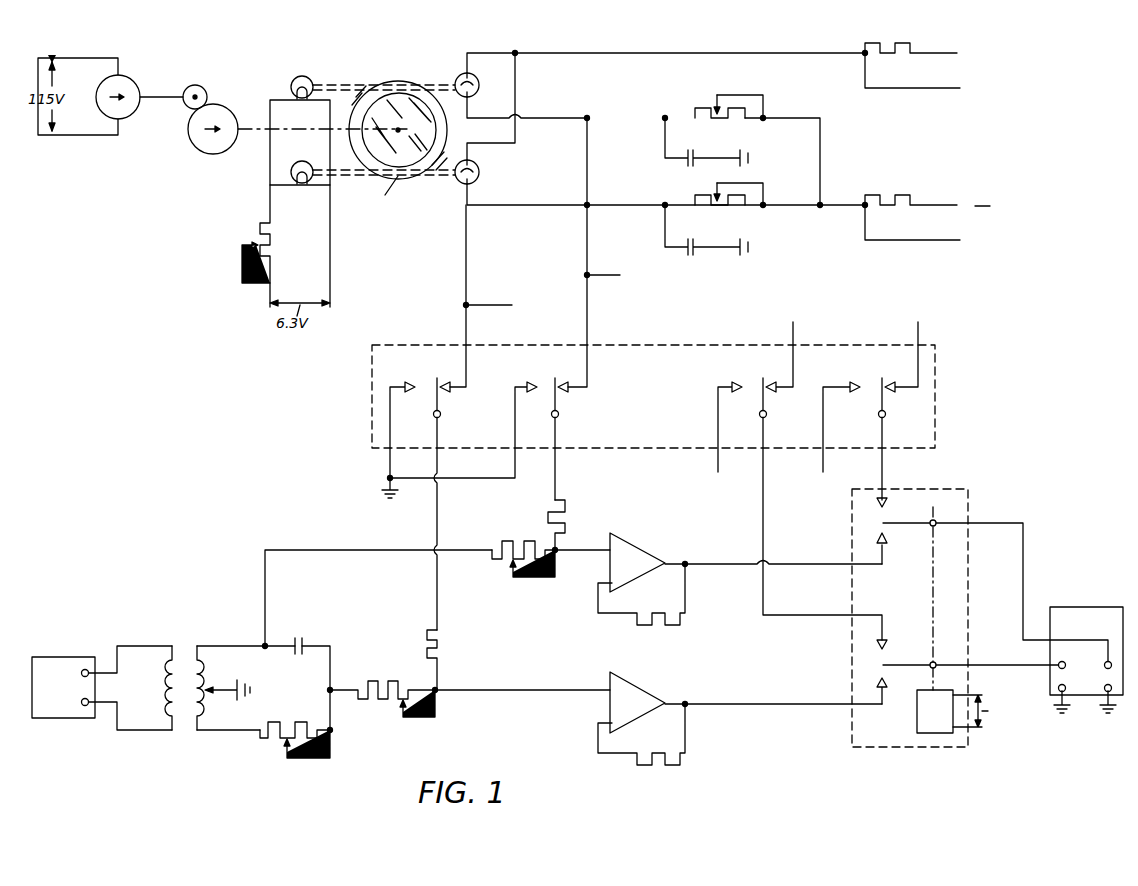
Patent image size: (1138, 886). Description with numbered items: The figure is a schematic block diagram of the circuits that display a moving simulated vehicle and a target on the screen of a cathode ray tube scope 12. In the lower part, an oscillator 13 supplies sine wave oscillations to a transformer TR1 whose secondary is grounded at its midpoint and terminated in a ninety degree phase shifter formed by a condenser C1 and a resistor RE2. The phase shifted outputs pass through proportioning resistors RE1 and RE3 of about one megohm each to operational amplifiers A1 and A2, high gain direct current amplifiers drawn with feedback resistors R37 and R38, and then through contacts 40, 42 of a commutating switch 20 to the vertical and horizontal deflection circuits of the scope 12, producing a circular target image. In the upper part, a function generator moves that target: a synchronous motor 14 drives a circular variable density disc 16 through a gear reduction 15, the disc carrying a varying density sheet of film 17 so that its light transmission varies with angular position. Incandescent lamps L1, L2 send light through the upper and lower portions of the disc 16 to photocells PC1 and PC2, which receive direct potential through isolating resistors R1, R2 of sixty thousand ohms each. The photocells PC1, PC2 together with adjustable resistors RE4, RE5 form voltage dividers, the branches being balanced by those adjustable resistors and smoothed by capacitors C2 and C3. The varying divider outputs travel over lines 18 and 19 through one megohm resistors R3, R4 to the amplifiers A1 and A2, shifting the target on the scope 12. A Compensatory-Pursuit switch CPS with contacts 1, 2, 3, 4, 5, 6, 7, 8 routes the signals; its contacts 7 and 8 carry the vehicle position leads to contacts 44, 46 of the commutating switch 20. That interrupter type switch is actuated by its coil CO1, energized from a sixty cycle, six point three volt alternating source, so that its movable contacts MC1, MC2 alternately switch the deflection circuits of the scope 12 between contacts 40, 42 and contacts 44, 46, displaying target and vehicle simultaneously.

The scope 12 is at (1085, 605).
The oscillator 13 is at (64, 656).
The synchronous motor 14 is at (134, 82).
The gear reduction 15 is at (212, 102).
The circular variable density disc 16 is at (400, 100).
The varying density sheet of film 17 is at (386, 196).
The line 18 is at (588, 255).
The line 19 is at (467, 266).
The commutating switch 20 is at (969, 494).
The contact 40 is at (884, 548).
The contact 42 is at (887, 683).
The contact 44 is at (887, 503).
The contact 46 is at (888, 643).
The selector contact 1 is at (416, 382).
The selector contact 2 is at (537, 382).
The selector contact 3 is at (744, 382).
The selector contact 4 is at (860, 382).
The selector contact 5 is at (450, 382).
The selector contact 6 is at (570, 382).
The contact 7 is at (777, 382).
The contact 8 is at (897, 382).
The incandescent lamp L1 is at (302, 79).
The incandescent lamp L2 is at (302, 164).
The photocell PC1 is at (480, 85).
The photocell PC2 is at (480, 172).
The proportioning resistor RE1 is at (510, 536).
The resistor RE2 is at (289, 720).
The proportioning resistor RE3 is at (370, 676).
The adjustable resistor RE4 is at (710, 112).
The adjustable resistor RE5 is at (710, 199).
The isolating resistor R1 is at (887, 52).
The isolating resistor R2 is at (887, 204).
The resistor R3 is at (566, 507).
The resistor R4 is at (440, 643).
The feedback resistor R37 is at (651, 612).
The feedback resistor R38 is at (651, 752).
The condenser C1 is at (297, 640).
The capacitor C2 is at (694, 154).
The capacitor C3 is at (694, 243).
The transformer TR1 is at (183, 648).
The operational amplifier A1 is at (746, 562).
The operational amplifier A2 is at (746, 702).
The movable contact MC1 is at (906, 537).
The movable contact MC2 is at (913, 655).
The coil CO1 is at (970, 711).
The Compensatory-Pursuit switch CPS is at (937, 362).